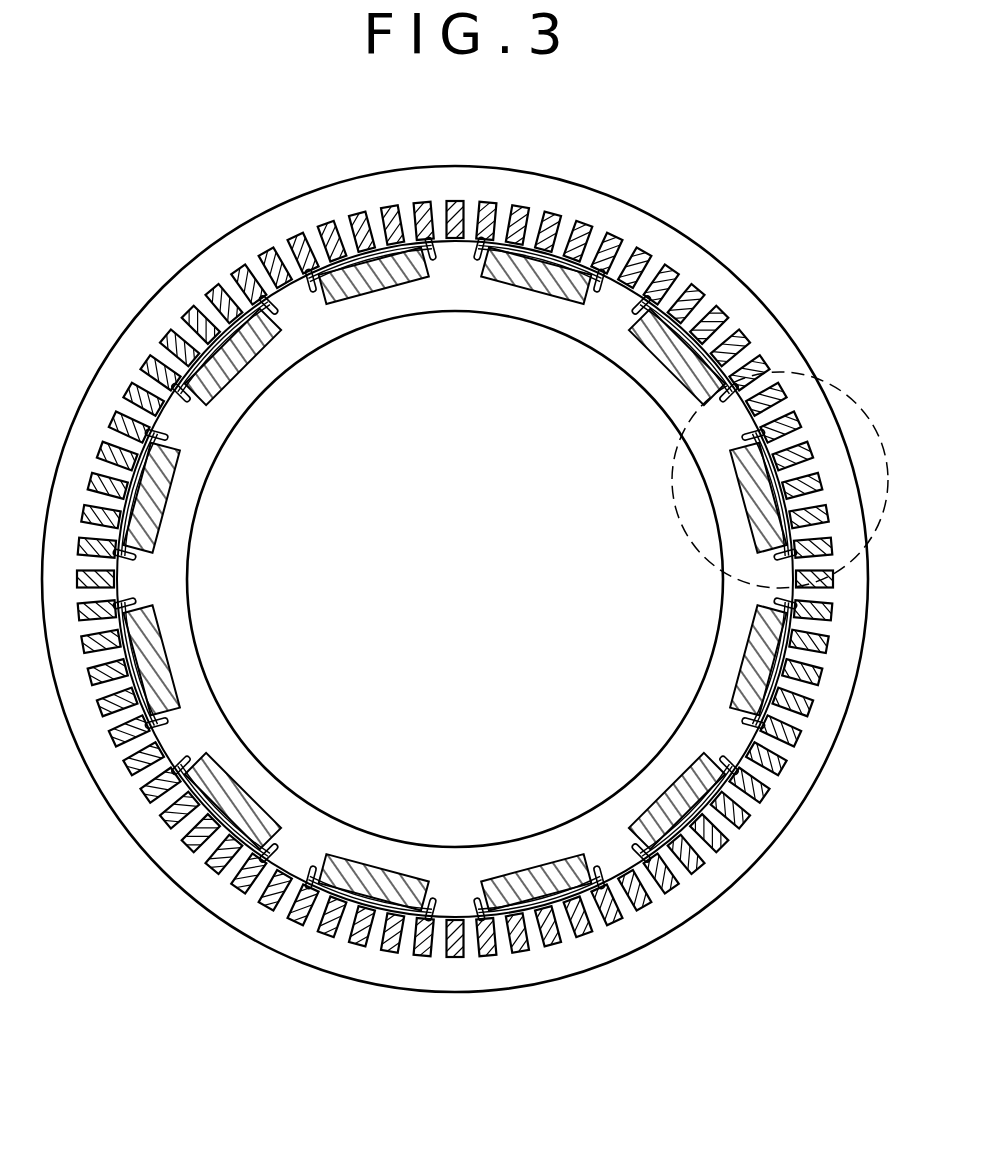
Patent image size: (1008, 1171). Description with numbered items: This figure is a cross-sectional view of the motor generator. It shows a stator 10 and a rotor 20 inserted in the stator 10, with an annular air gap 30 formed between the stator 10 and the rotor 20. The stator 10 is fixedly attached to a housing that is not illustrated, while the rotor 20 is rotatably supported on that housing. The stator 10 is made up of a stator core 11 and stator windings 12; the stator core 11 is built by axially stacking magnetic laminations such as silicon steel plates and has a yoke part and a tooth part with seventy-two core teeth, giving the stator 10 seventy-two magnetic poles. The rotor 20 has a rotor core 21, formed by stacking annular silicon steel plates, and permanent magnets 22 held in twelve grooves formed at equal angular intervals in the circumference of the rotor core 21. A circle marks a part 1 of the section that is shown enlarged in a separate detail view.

The part surrounded by a circle 1 is at (843, 393).
The stator 10 is at (504, 198).
The stator core 11 is at (648, 208).
The stator windings 12 is at (642, 252).
The rotor 20 is at (329, 335).
The rotor core 21 is at (552, 317).
The permanent magnets 22 is at (378, 272).
The annular air gap 30 is at (322, 267).